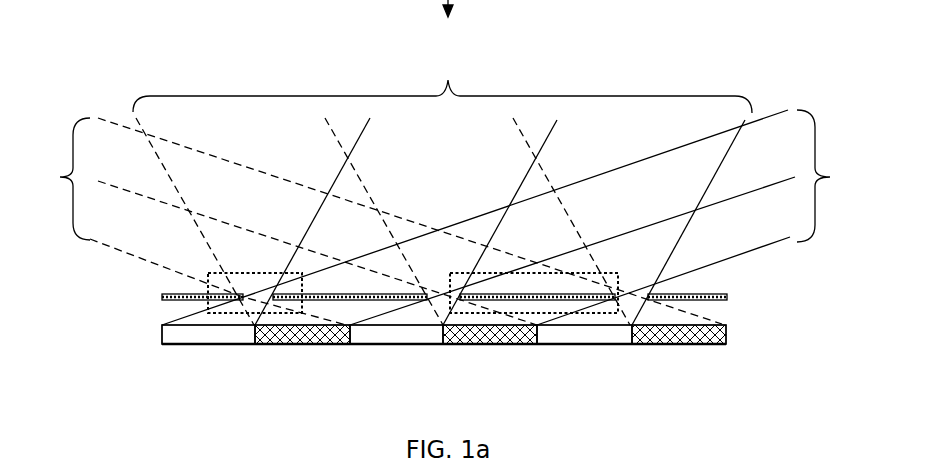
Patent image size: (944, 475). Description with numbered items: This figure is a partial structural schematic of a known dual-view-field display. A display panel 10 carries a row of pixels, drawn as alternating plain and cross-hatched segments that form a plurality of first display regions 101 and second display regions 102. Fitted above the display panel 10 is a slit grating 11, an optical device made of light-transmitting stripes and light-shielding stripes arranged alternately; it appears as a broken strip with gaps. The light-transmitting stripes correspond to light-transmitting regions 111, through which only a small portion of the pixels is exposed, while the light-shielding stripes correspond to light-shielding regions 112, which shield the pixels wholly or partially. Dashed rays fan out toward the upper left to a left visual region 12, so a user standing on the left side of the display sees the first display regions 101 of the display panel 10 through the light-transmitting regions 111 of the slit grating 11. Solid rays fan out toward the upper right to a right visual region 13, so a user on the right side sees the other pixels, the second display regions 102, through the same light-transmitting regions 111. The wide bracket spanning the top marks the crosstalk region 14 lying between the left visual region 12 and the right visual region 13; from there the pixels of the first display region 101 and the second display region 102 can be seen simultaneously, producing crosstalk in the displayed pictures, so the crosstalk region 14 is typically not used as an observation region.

The display panel 10 is at (467, 370).
The first display region 101 is at (318, 333).
The second display region 102 is at (407, 333).
The slit grating 11 is at (165, 298).
The light-transmitting region 111 is at (232, 316).
The light-shielding region 112 is at (547, 315).
The left visual region 12 is at (376, 222).
The right visual region 13 is at (514, 217).
The crosstalk region 14 is at (442, 82).